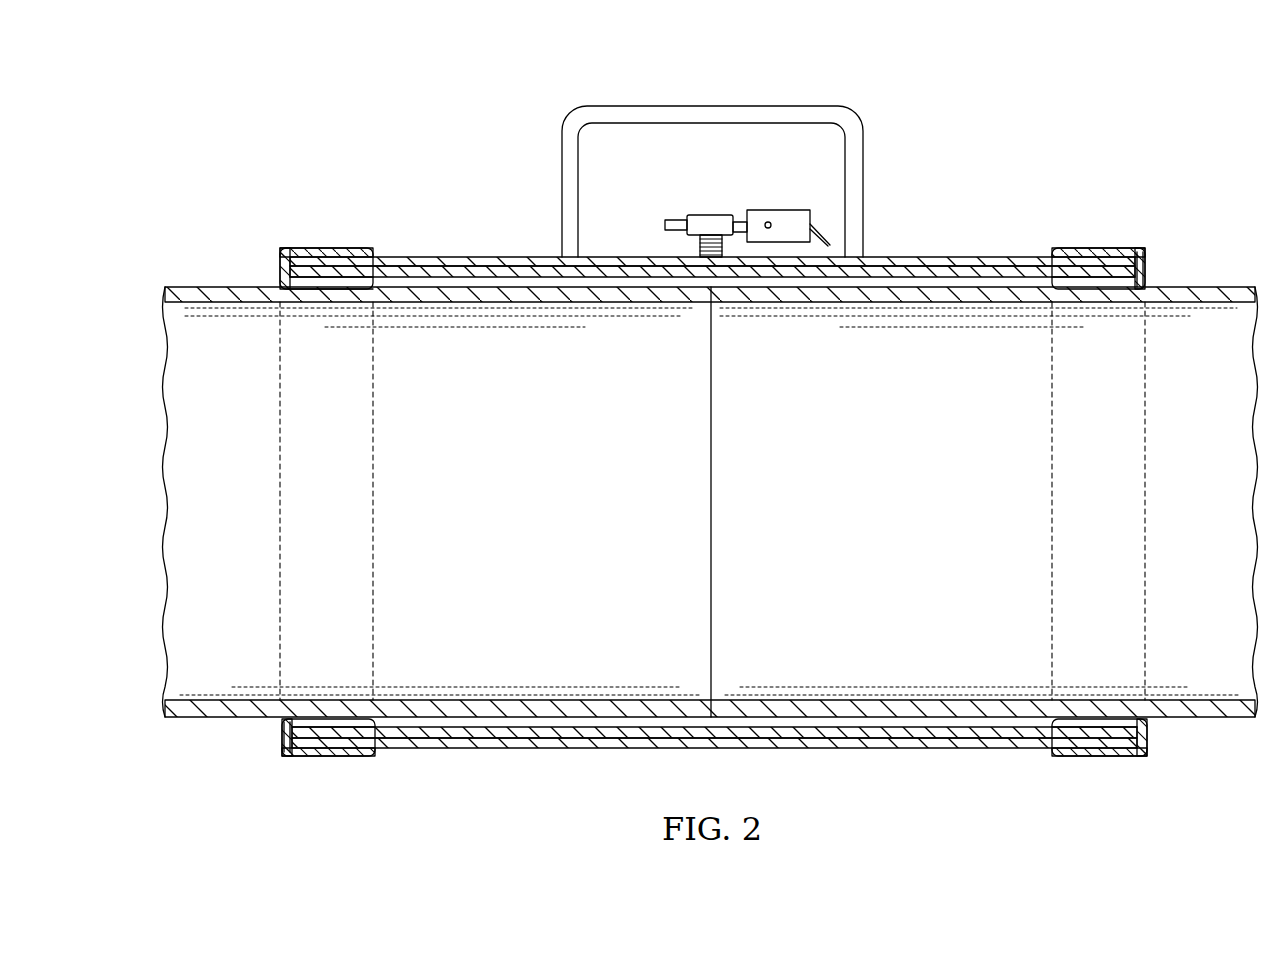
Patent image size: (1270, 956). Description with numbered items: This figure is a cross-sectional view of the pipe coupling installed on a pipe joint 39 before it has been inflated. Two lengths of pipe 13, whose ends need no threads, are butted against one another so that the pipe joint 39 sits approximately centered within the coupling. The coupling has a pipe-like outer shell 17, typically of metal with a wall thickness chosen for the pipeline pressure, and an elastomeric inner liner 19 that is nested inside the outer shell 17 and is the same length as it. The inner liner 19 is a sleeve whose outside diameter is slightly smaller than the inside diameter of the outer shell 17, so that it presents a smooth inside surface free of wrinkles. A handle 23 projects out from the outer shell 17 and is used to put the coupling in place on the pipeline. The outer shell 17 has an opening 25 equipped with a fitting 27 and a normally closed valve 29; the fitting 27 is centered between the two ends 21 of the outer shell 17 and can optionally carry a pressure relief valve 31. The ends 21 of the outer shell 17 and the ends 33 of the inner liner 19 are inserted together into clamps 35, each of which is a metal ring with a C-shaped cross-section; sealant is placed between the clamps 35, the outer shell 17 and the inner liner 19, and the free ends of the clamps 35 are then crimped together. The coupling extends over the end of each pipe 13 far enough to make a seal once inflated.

The pipe 13 is at (195, 287).
The outer shell 17 is at (510, 257).
The inner liner 19 is at (427, 266).
The outer shell ends 21 is at (1130, 258).
The handle 23 is at (715, 106).
The opening 25 is at (700, 262).
The fitting 27 is at (714, 215).
The valve 29 is at (676, 220).
The pressure relief valve 31 is at (783, 210).
The inner liner ends 33 is at (1148, 268).
The clamps 35 is at (327, 248).
The pipe joint 39 is at (711, 500).